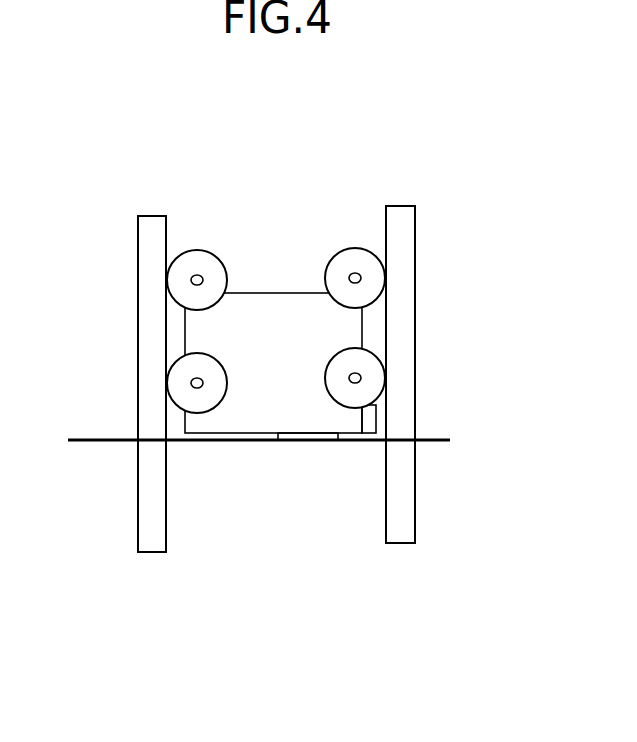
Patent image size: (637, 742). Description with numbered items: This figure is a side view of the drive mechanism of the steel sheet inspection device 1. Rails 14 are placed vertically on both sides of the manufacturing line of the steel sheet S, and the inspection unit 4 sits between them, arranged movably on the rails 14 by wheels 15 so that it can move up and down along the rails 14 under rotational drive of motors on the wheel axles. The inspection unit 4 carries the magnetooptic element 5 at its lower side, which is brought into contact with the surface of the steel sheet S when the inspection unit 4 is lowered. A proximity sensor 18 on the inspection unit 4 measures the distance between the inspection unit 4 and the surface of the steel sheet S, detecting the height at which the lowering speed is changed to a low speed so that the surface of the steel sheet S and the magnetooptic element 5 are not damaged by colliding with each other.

The steel sheet inspection device 1 is at (163, 176).
The inspection unit 4 is at (270, 293).
The magnetooptic element 5 is at (305, 440).
The rails 14 is at (138, 338).
The wheels 15 is at (196, 250).
The proximity sensor 18 is at (372, 440).
The steel sheet S is at (435, 440).